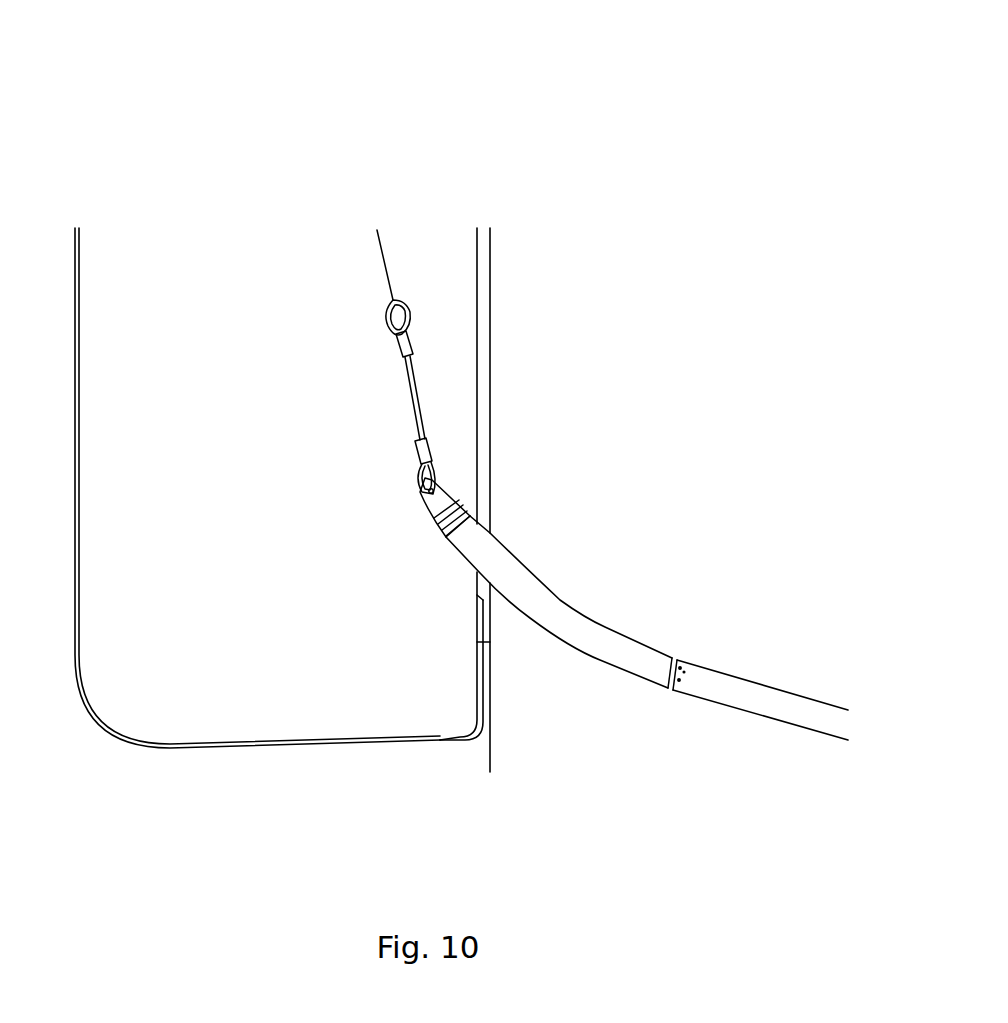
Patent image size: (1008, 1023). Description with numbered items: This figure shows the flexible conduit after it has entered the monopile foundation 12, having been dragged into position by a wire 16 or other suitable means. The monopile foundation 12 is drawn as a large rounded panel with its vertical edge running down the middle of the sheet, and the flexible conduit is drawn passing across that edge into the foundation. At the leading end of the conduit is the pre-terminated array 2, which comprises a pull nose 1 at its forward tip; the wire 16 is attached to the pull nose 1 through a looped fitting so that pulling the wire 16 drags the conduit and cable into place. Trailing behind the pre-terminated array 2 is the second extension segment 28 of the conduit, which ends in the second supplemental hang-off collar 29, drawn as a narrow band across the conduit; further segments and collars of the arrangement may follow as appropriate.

The pull nose 1 is at (440, 497).
The pre-terminated array 2 is at (545, 585).
The monopile foundation 12 is at (493, 266).
The wire 16 is at (391, 263).
The second extension segment 28 is at (750, 678).
The second supplemental hang-off collar 29 is at (675, 655).